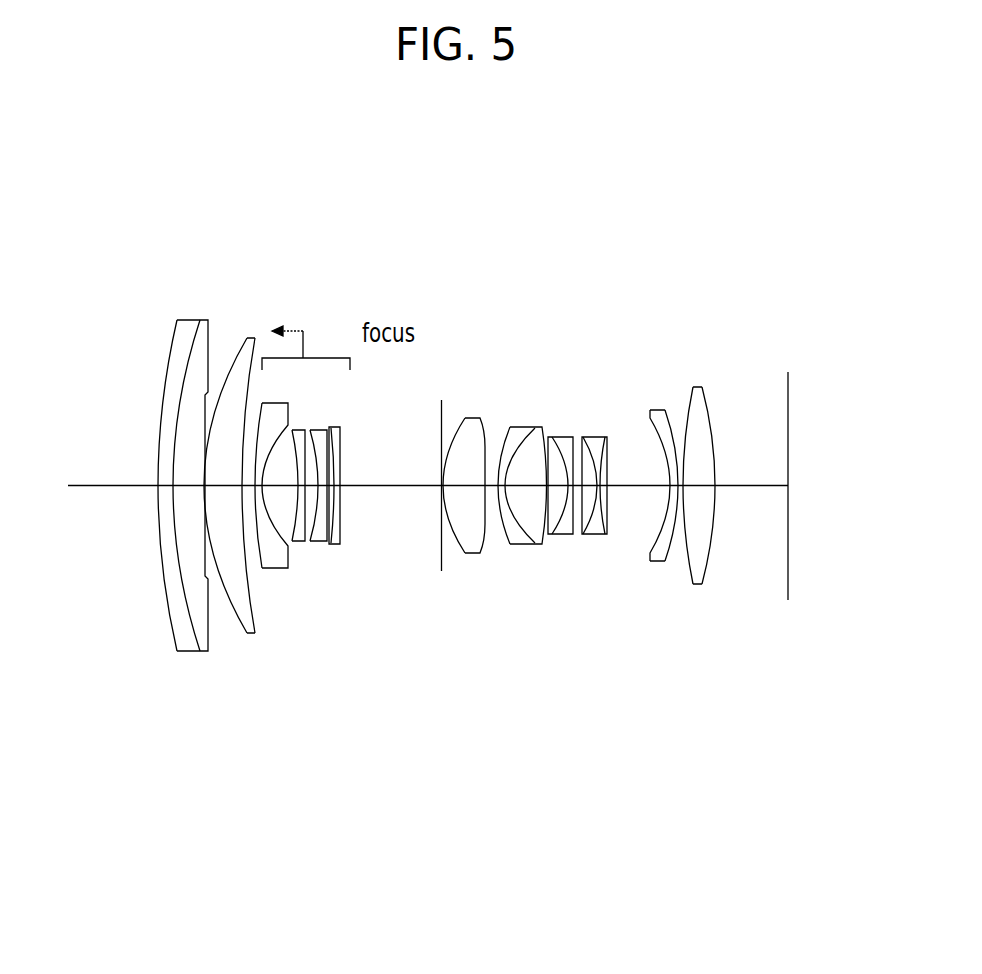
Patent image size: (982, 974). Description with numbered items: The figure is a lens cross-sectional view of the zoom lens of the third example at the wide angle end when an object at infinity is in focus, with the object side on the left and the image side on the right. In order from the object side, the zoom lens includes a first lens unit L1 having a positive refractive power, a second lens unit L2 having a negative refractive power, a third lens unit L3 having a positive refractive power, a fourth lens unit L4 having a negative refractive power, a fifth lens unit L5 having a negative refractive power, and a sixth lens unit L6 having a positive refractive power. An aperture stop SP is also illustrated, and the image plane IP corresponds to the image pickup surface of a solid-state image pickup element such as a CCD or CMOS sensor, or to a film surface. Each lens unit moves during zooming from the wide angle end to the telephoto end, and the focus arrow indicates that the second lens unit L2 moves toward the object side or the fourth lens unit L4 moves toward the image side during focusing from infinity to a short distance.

The first lens unit L1 is at (67, 815).
The second lens unit L2 is at (242, 815).
The third lens unit L3 is at (400, 815).
The fourth lens unit L4 is at (505, 815).
The fifth lens unit L5 is at (552, 815).
The sixth lens unit L6 is at (622, 815).
The aperture stop SP is at (442, 412).
The image plane IP is at (789, 385).